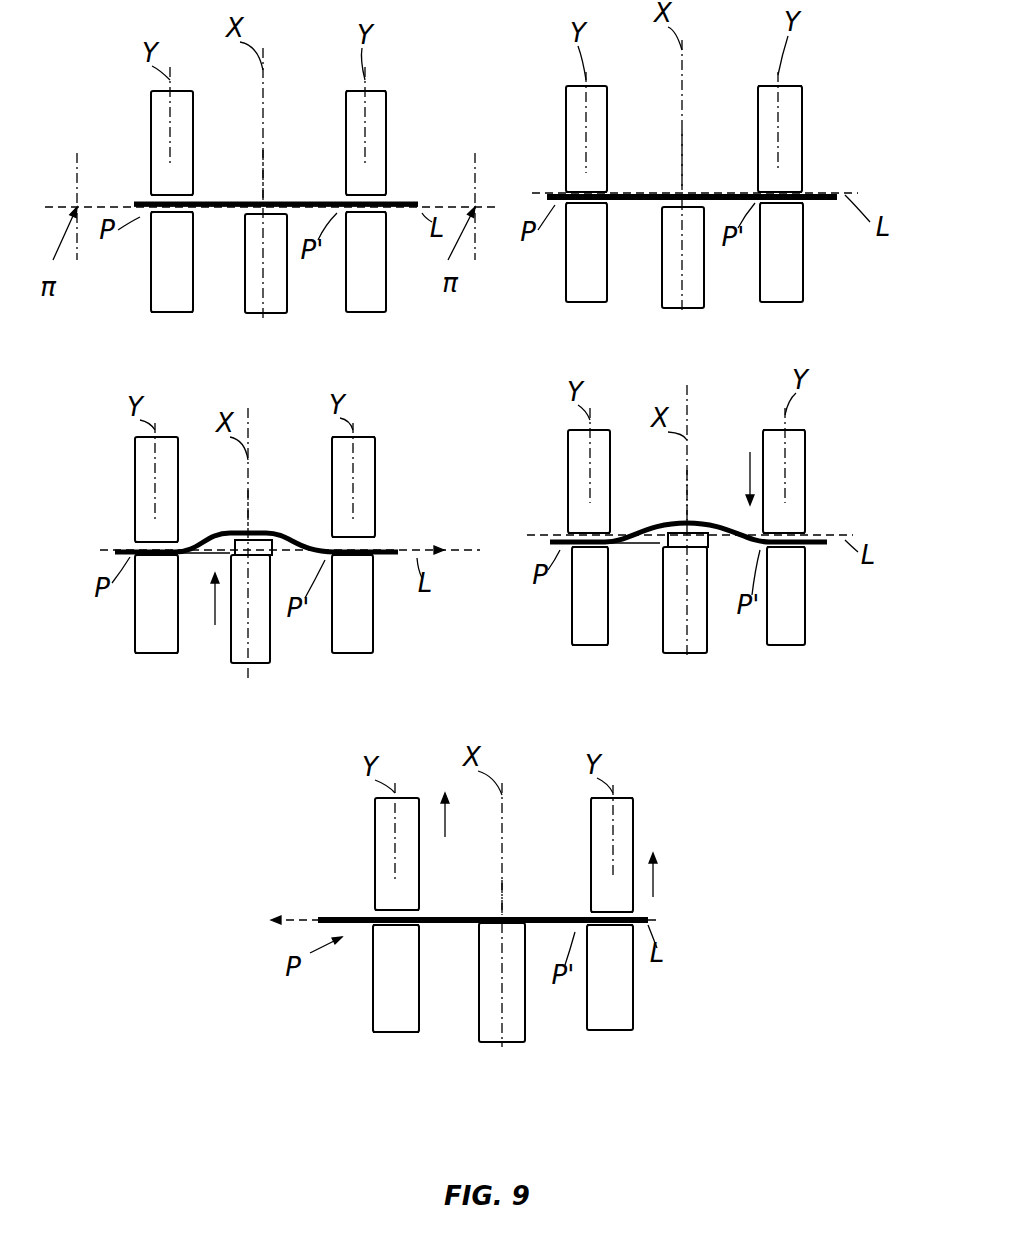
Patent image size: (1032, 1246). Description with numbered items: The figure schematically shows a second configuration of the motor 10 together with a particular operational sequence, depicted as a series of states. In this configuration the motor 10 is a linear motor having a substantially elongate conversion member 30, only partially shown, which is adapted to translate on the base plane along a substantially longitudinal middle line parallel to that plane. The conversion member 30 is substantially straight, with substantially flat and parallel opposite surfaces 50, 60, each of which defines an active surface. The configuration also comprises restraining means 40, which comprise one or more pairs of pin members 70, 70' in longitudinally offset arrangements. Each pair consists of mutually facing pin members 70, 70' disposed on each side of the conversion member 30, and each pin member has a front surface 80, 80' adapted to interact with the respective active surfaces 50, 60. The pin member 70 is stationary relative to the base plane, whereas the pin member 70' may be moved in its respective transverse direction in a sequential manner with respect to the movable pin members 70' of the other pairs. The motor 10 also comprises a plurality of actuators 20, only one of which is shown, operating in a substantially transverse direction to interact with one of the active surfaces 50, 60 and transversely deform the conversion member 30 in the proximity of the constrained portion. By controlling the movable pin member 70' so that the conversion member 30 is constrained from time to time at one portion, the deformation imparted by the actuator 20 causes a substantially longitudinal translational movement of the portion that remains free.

The motor 10 is at (400, 90).
The actuator 20 is at (287, 295).
The conversion member 30 is at (305, 173).
The restraining means 40 is at (172, 312).
The active surface 50 is at (215, 200).
The active surface 60 is at (222, 210).
The pin member 70 is at (474, 645).
The movable pin member 70' is at (475, 498).
The front surface 80 is at (473, 609).
The front surface 80' is at (486, 522).